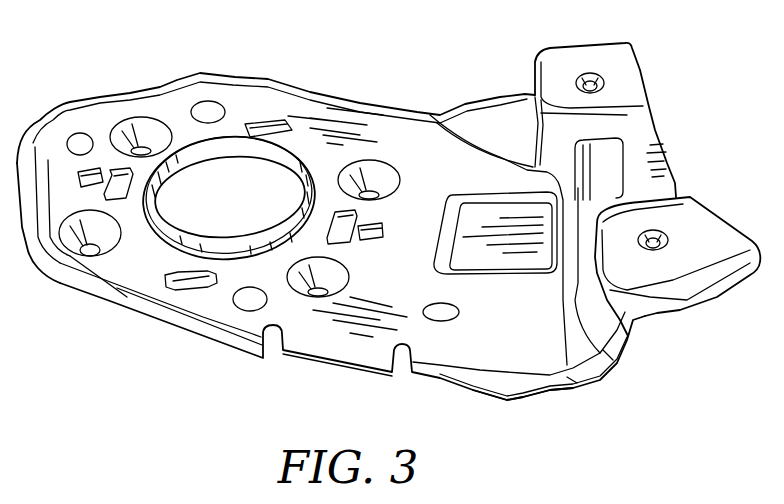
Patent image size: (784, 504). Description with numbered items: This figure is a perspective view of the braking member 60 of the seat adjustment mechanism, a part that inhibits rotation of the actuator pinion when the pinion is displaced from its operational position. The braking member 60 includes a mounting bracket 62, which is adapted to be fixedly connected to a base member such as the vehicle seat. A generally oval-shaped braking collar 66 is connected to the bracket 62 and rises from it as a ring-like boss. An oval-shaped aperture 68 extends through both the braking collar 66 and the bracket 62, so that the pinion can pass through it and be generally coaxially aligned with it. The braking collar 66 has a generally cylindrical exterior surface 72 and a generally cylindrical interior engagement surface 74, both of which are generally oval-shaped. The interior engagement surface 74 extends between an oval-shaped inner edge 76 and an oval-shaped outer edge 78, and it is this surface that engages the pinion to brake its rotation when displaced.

The braking member 60 is at (311, 72).
The mounting bracket 62 is at (533, 357).
The braking collar 66 is at (163, 248).
The aperture 68 is at (273, 197).
The exterior surface 72 is at (236, 252).
The interior engagement surface 74 is at (188, 142).
The inner edge 76 is at (185, 173).
The outer edge 78 is at (153, 160).